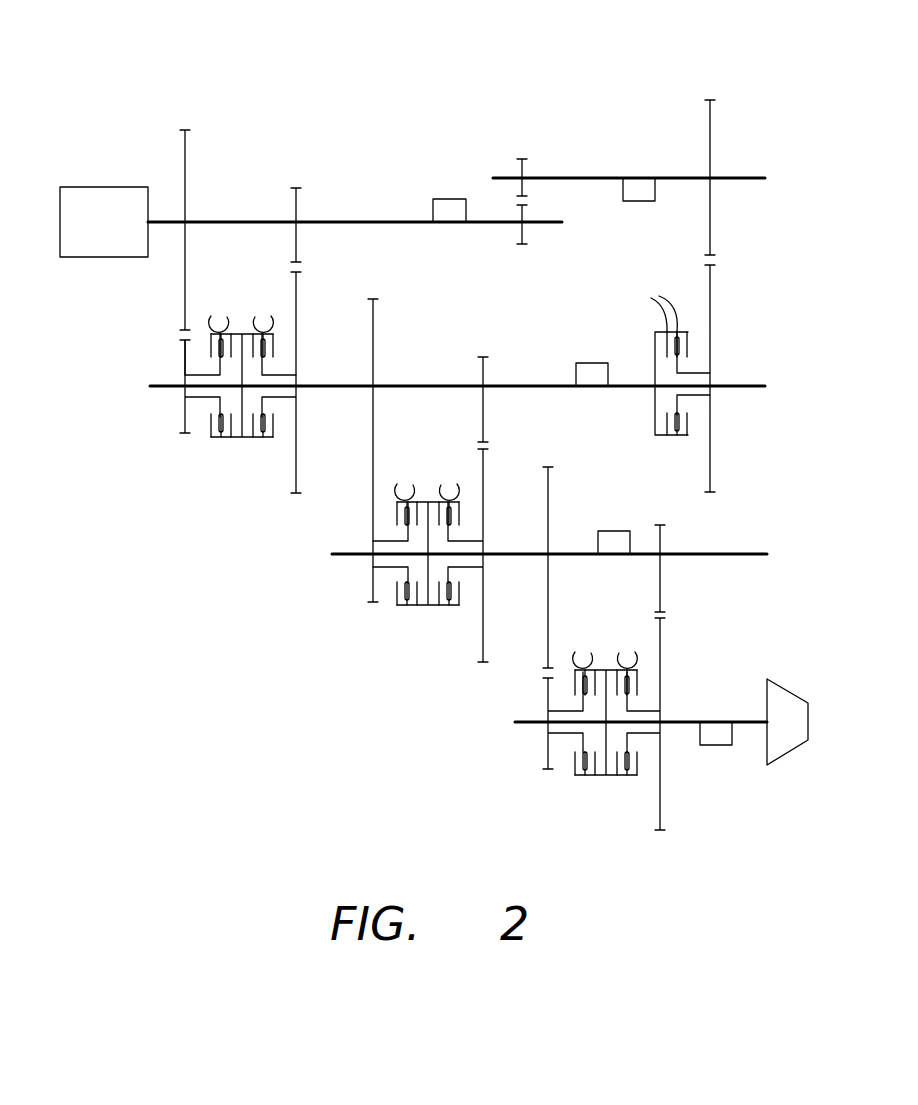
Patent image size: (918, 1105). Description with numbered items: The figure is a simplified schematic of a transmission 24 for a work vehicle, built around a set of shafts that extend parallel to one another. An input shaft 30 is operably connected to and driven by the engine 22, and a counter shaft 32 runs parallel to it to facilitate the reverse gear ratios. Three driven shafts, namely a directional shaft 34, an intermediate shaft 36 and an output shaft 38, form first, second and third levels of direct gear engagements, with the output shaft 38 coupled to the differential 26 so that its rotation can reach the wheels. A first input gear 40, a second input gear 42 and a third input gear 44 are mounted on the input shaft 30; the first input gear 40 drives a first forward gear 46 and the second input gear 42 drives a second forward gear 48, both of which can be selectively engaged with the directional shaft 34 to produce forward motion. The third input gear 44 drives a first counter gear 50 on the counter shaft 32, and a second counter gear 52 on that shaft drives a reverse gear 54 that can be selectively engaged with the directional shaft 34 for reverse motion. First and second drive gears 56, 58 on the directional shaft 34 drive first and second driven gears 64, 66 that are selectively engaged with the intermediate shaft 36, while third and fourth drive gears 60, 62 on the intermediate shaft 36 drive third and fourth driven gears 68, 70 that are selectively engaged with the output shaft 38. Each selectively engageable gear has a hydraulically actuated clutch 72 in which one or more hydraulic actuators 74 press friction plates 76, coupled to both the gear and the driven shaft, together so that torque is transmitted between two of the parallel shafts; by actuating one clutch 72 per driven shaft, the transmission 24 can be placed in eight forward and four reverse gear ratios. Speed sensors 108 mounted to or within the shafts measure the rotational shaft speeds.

The engine 22 is at (119, 234).
The transmission 24 is at (254, 68).
The differential 26 is at (796, 756).
The input shaft 30 is at (366, 218).
The counter shaft 32 is at (596, 176).
The directional shaft 34 is at (160, 390).
The intermediate shaft 36 is at (343, 560).
The output shaft 38 is at (526, 728).
The first input gear 40 is at (186, 158).
The second input gear 42 is at (297, 200).
The third input gear 44 is at (516, 232).
The first forward gear 46 is at (184, 355).
The second forward gear 48 is at (297, 345).
The first counter gear 50 is at (523, 168).
The second counter gear 52 is at (711, 118).
The reverse gear 54 is at (712, 340).
The first drive gear 56 is at (374, 340).
The second drive gear 58 is at (484, 368).
The third drive gear 60 is at (549, 480).
The fourth drive gear 62 is at (662, 540).
The first driven gear 64 is at (372, 530).
The second driven gear 66 is at (484, 510).
The third driven gear 68 is at (547, 695).
The fourth driven gear 70 is at (662, 672).
The hydraulically actuated clutch 72 is at (259, 286).
The hydraulic actuator 74 is at (618, 811).
The friction plates 76 is at (650, 297).
The speed sensor 108 is at (447, 199).